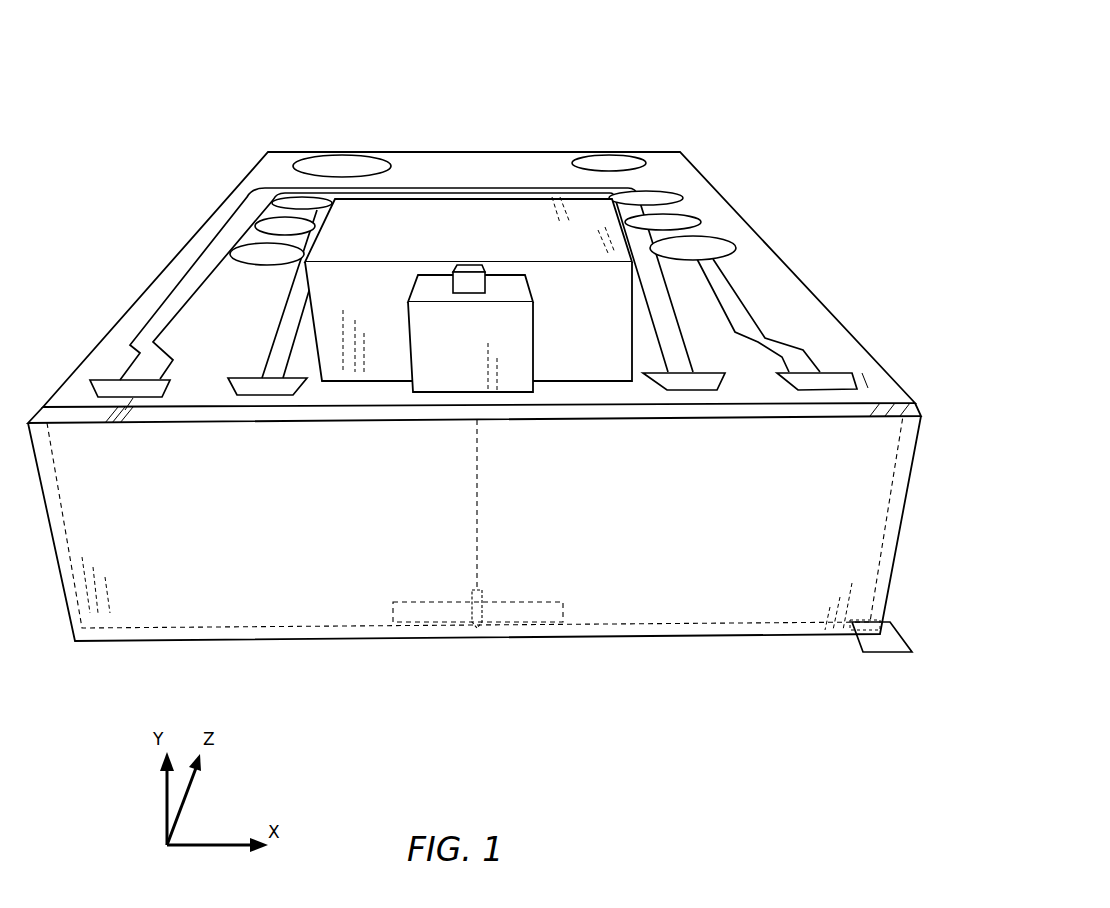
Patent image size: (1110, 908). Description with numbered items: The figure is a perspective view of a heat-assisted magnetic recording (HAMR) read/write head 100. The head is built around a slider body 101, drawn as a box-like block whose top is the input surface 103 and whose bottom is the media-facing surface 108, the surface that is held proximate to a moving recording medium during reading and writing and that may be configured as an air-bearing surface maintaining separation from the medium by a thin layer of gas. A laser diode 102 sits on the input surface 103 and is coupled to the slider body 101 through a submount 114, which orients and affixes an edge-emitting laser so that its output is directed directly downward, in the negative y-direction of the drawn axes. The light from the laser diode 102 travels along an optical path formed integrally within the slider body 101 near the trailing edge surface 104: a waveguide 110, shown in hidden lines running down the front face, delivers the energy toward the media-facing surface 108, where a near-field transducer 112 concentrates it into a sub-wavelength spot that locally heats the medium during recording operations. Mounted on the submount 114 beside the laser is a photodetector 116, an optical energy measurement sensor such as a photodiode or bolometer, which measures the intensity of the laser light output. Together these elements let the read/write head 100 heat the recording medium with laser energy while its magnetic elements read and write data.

The read/write head 100 is at (684, 92).
The slider body 101 is at (245, 180).
The laser diode 102 is at (537, 326).
The input surface 103 is at (105, 358).
The trailing edge surface 104 is at (145, 613).
The media-facing surface 108 is at (900, 657).
The waveguide 110 is at (480, 593).
The near-field transducer 112 is at (438, 622).
The submount 114 is at (390, 213).
The photodetector 116 is at (472, 264).